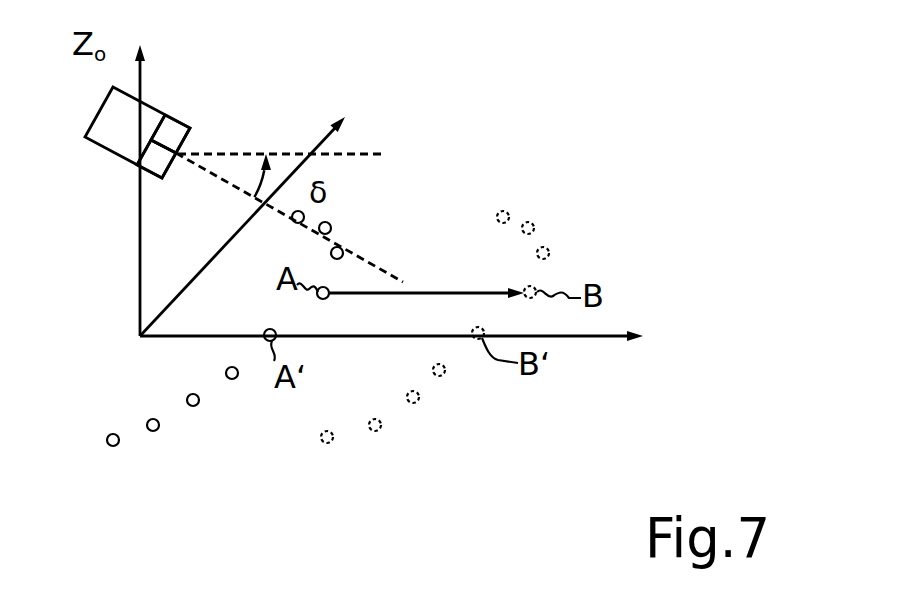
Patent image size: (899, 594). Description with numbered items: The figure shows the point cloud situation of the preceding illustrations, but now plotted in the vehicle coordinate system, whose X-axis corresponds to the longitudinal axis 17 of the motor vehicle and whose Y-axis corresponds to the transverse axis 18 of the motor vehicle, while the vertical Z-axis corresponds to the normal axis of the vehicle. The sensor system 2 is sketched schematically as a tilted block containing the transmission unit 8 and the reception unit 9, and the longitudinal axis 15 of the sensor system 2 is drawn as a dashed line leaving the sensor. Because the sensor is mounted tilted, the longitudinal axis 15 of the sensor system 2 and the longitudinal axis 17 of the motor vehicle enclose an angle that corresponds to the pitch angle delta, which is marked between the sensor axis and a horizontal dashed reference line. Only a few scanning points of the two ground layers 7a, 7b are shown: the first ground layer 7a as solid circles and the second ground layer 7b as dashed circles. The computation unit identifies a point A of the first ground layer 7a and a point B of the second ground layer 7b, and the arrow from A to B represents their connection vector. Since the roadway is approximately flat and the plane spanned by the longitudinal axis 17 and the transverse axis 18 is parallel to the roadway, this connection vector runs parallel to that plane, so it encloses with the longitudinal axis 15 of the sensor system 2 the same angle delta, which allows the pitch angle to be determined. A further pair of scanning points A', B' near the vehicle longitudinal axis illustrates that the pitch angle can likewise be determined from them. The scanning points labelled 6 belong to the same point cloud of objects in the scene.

The sensor system 2 is at (102, 162).
The transmission unit 8 is at (170, 134).
The reception unit 9 is at (156, 159).
The objects 6 is at (430, 205).
The longitudinal axis of the sensor system 15 is at (394, 278).
The longitudinal axis of the motor vehicle 17 is at (439, 337).
The transverse axis of the motor vehicle 18 is at (263, 205).
The first ground layer 7a is at (94, 456).
The second ground layer 7b is at (314, 456).